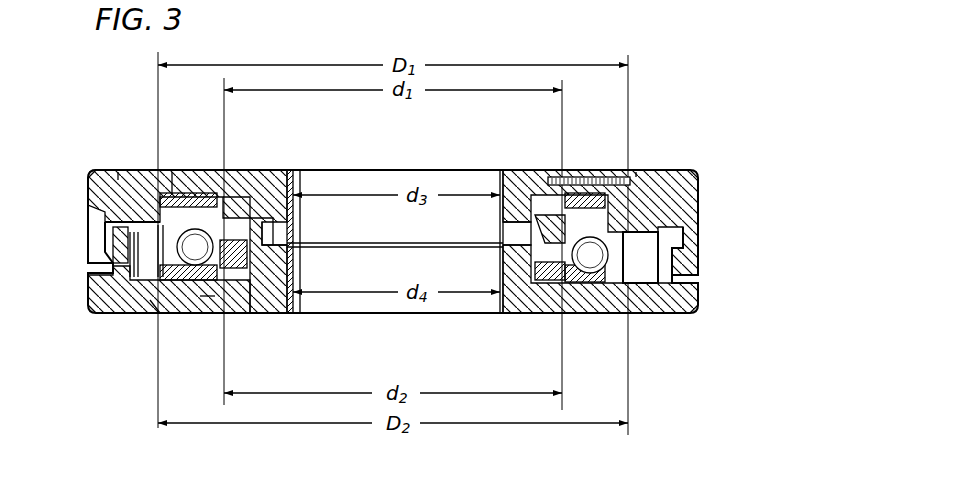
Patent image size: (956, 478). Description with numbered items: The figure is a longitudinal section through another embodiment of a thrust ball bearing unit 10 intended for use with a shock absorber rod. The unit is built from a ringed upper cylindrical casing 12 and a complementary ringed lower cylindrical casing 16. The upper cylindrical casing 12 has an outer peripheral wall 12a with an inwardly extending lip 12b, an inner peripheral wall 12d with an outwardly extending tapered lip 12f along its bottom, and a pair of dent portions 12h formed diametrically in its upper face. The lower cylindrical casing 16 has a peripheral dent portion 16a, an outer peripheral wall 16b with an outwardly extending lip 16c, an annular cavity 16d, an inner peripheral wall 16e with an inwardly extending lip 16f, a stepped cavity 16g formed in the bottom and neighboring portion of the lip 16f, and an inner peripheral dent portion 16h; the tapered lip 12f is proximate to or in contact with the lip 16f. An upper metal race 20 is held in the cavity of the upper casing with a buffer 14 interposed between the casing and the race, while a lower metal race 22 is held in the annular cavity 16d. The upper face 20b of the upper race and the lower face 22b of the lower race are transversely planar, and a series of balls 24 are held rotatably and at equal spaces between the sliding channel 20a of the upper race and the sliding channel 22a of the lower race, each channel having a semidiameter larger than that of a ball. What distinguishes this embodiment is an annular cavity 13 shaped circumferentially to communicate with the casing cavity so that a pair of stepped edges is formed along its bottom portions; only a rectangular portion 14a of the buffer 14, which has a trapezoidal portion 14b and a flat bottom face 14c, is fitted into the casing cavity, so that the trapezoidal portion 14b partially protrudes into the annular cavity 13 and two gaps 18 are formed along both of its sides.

The thrust ball bearing unit 10 is at (708, 191).
The upper cylindrical casing 12 is at (701, 170).
The outer peripheral wall 12a is at (90, 174).
The inwardly extending lip 12b is at (110, 257).
The inner peripheral wall 12d is at (290, 210).
The outwardly extending lip 12f is at (290, 235).
The dent portions 12h is at (556, 172).
The annular cavity 13 is at (172, 172).
The buffer 14 is at (143, 172).
The rectangular portion 14a is at (198, 175).
The trapezoidal portion 14b is at (268, 180).
The flat bottom face 14c is at (228, 180).
The lower cylindrical casing 16 is at (700, 316).
The peripheral dent portion 16a is at (108, 268).
The outer peripheral wall 16b is at (118, 278).
The outwardly extending lip 16c is at (107, 222).
The annular cavity 16d is at (118, 314).
The inner peripheral wall 16e is at (243, 290).
The inwardly extending lip 16f is at (288, 182).
The stepped cavity 16g is at (205, 296).
The inner peripheral dent portion 16h is at (296, 248).
The gaps 18 is at (122, 172).
The upper metal race 20 is at (650, 172).
The sliding channel 20a is at (513, 172).
The upper face 20b is at (588, 172).
The lower metal race 22 is at (592, 285).
The sliding channel 22a is at (548, 285).
The lower face 22b is at (632, 285).
The balls 24 is at (155, 300).